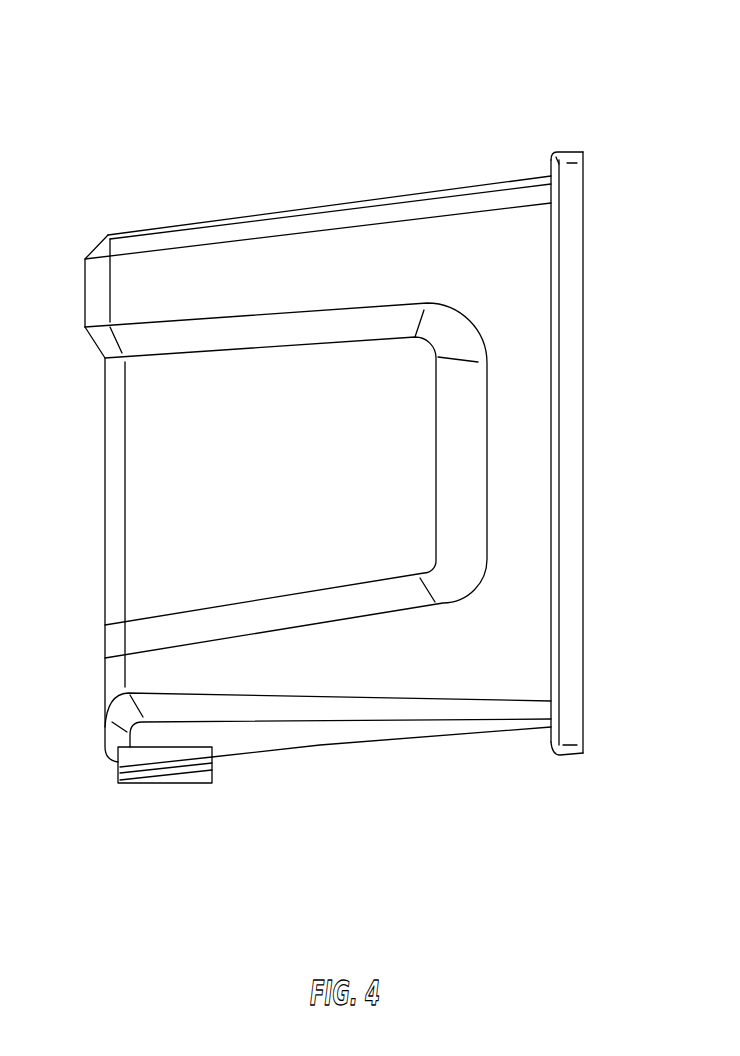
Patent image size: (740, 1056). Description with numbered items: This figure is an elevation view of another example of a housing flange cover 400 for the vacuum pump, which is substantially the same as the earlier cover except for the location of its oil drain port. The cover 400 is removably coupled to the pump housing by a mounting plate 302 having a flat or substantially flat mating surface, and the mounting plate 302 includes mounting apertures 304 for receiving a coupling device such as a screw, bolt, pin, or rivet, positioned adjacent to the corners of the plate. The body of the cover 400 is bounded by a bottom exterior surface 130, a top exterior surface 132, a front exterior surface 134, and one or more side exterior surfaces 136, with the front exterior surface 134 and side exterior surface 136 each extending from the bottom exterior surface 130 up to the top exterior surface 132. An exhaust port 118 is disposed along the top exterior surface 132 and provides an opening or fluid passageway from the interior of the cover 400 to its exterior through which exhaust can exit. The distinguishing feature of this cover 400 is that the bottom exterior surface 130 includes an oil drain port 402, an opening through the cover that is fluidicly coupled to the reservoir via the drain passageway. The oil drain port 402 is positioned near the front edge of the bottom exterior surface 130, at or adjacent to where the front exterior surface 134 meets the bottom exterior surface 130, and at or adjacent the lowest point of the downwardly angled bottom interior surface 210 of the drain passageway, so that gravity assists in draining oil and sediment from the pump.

The housing flange cover 400 is at (560, 72).
The exhaust port 118 is at (200, 216).
The top exterior surface 132 is at (339, 203).
The front exterior surface 134 is at (105, 602).
The side exterior surface 136 is at (293, 497).
The bottom exterior surface 130 is at (367, 745).
The bottom interior surface 210 is at (318, 743).
The oil drain port 402 is at (118, 767).
The mounting plate 302 is at (573, 432).
The mounting aperture 304 is at (548, 744).